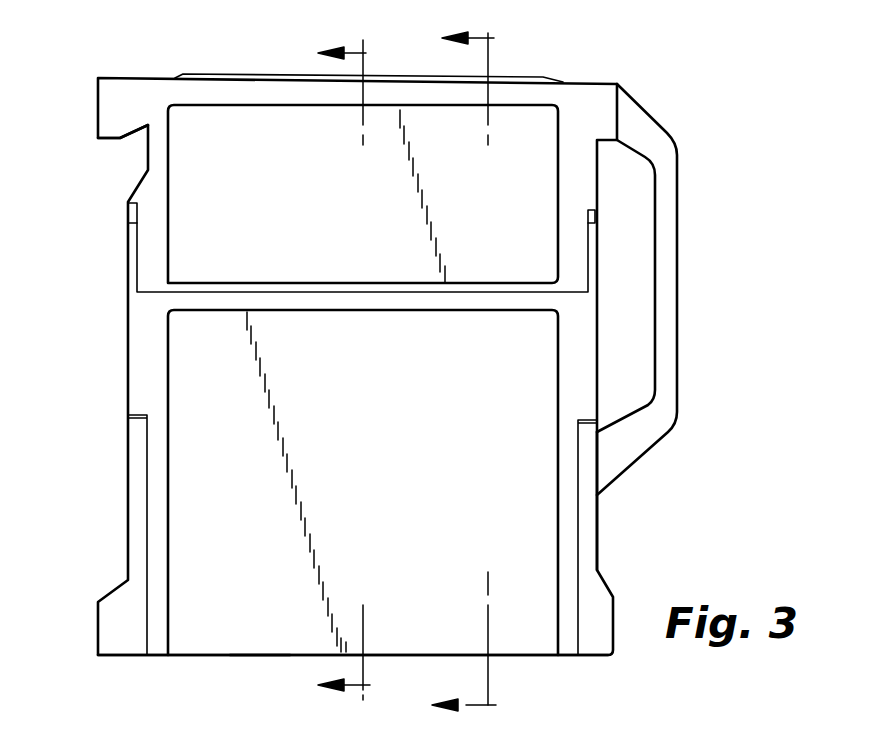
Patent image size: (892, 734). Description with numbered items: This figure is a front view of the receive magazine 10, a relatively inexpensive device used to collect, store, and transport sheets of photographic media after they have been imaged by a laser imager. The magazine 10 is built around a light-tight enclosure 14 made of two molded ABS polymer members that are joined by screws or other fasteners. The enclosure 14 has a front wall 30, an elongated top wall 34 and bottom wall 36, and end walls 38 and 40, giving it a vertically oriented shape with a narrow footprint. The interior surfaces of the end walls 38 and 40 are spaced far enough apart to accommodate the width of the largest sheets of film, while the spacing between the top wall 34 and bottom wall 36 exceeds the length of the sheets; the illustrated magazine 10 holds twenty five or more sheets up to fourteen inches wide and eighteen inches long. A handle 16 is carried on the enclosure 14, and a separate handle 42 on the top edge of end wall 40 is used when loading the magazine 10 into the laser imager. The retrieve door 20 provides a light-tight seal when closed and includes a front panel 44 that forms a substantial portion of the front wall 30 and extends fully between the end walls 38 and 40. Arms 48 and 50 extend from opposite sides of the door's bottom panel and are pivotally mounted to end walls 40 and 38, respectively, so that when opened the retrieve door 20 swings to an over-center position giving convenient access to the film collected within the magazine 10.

The receive magazine 10 is at (707, 126).
The light-tight enclosure 14 is at (612, 589).
The handle 16 is at (665, 227).
The retrieve door 20 is at (259, 642).
The front wall 30 is at (183, 230).
The top wall 34 is at (595, 82).
The bottom wall 36 is at (194, 657).
The end wall 38 is at (595, 525).
The end wall 40 is at (128, 470).
The handle 42 is at (135, 133).
The front panel 44 is at (180, 532).
The arm 48 is at (132, 273).
The arm 50 is at (592, 273).